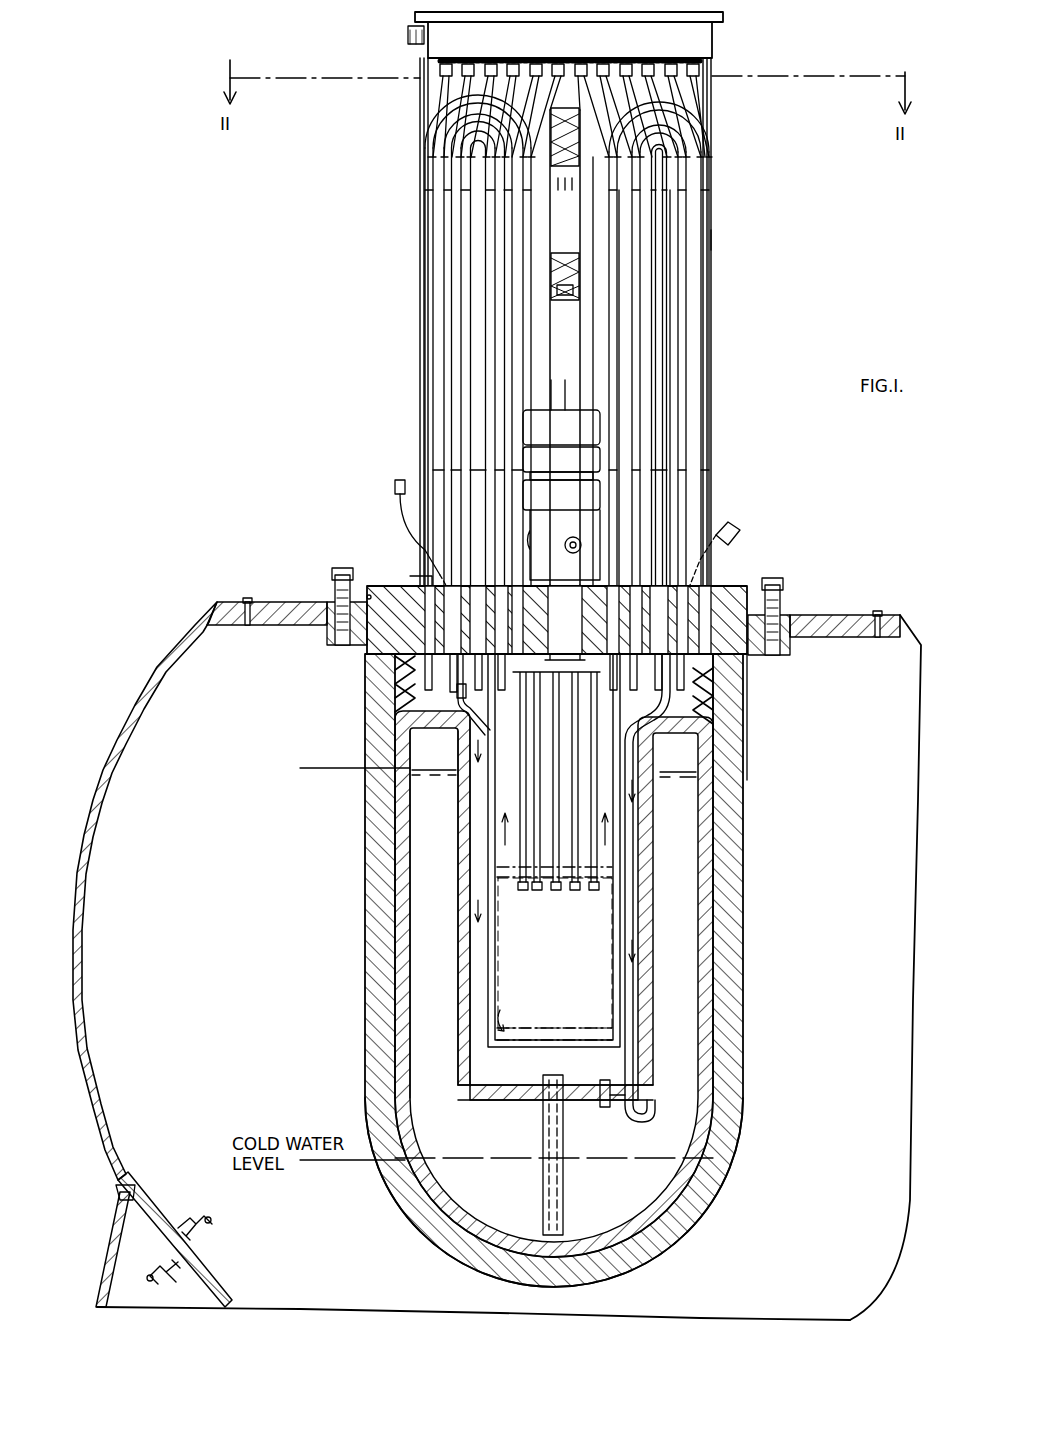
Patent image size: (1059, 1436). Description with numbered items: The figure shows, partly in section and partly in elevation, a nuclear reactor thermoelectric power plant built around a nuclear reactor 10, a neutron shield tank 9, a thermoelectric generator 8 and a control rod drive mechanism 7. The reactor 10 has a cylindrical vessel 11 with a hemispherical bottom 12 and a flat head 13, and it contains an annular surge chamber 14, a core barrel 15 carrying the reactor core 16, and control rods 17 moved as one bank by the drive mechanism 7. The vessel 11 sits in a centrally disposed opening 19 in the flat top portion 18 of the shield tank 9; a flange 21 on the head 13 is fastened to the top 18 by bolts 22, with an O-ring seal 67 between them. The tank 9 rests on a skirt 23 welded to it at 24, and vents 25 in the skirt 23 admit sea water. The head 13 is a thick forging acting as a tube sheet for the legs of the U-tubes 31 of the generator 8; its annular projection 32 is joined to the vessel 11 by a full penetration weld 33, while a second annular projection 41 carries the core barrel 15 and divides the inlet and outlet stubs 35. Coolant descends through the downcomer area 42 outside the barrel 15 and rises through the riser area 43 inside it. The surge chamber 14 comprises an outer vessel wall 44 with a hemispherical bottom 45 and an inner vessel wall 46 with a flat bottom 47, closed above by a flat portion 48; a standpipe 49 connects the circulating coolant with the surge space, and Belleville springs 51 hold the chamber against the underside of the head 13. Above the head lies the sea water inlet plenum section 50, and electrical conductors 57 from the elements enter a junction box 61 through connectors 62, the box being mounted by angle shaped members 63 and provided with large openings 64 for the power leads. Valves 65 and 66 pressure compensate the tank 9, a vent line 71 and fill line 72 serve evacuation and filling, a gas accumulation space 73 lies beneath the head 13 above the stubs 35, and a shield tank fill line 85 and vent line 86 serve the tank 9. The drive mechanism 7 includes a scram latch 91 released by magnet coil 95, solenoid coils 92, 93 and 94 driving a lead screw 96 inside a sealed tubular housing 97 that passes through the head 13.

The control rod drive mechanism 7 is at (565, 347).
The thermoelectric generator 8 is at (729, 240).
The neutron shield tank 9 is at (172, 668).
The nuclear reactor 10 is at (473, 1109).
The vessel 11 is at (365, 846).
The hemispherical bottom 12 is at (436, 1242).
The head 13 is at (750, 592).
The surge chamber 14 is at (432, 853).
The core barrel 15 is at (490, 998).
The reactor core 16 is at (500, 950).
The control rods 17 is at (514, 772).
The flat top portion 18 is at (300, 603).
The opening 19 is at (364, 647).
The flange 21 is at (790, 614).
The bolts 22 is at (783, 580).
The skirt 23 is at (106, 1245).
The weld 24 is at (118, 1178).
The vents 25 is at (120, 1202).
The U-tubes 31 is at (422, 285).
The annular projection 32 is at (740, 678).
The full penetration weld 33 is at (720, 712).
The inlet and outlet stubs 35 is at (628, 698).
The annular projection 41 is at (476, 700).
The downcomer area 42 is at (476, 822).
The riser area 43 is at (470, 796).
The outer vessel wall 44 is at (404, 898).
The hemispherical bottom 45 is at (493, 1242).
The inner vessel wall 46 is at (460, 916).
The flat bottom 47 is at (500, 1101).
The flat portion 48 is at (438, 740).
The standpipe 49 is at (542, 1137).
The sea water inlet plenum section 50 is at (391, 549).
The Belleville springs 51 is at (394, 688).
The electrical conductors 57 is at (706, 108).
The junction box 61 is at (697, 44).
The connector 62 is at (700, 73).
The angle shaped members 63 is at (432, 104).
The large openings 64 is at (416, 44).
The valve 65 is at (196, 1220).
The valve 66 is at (162, 1270).
The O-ring seal 67 is at (370, 596).
The vent line 71 is at (740, 518).
The fill line 72 is at (393, 486).
The gas accumulation space 73 is at (546, 665).
The shield tank fill line 85 is at (877, 614).
The vent line 86 is at (247, 600).
The scram latch 91 is at (569, 553).
The solenoid coil 92 is at (584, 446).
The solenoid coil 93 is at (592, 414).
The solenoid coil 94 is at (572, 504).
The magnet coil 95 is at (538, 520).
The lead screw 96 is at (565, 296).
The tubular housing 97 is at (556, 398).